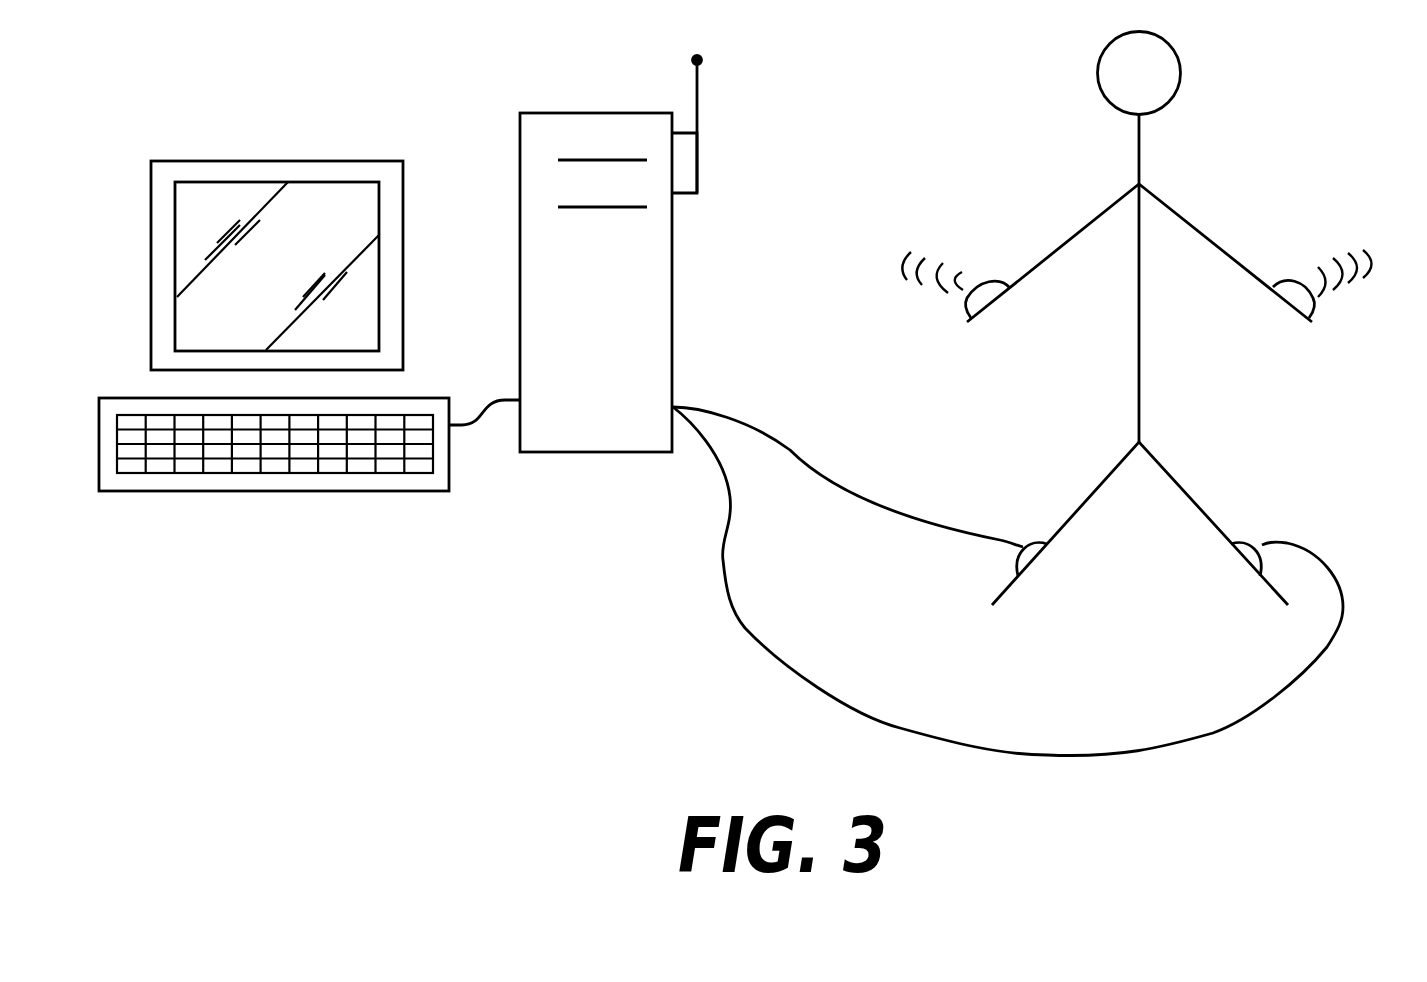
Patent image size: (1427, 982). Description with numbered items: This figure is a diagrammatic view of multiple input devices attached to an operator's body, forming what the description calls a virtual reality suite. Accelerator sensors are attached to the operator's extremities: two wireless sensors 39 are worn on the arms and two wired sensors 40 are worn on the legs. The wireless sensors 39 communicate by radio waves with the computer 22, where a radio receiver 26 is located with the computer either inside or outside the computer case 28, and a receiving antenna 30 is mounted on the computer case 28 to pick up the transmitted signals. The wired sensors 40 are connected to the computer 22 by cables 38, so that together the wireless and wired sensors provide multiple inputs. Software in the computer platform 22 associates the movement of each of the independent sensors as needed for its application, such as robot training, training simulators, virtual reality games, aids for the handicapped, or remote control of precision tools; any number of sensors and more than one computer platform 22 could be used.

The computer 22 is at (507, 152).
The radio receiver 26 is at (688, 165).
The computer case 28 is at (673, 258).
The receiving antenna 30 is at (702, 58).
The cables 38 is at (867, 523).
The wireless sensors 39 is at (988, 283).
The wired sensors 40 is at (1025, 545).